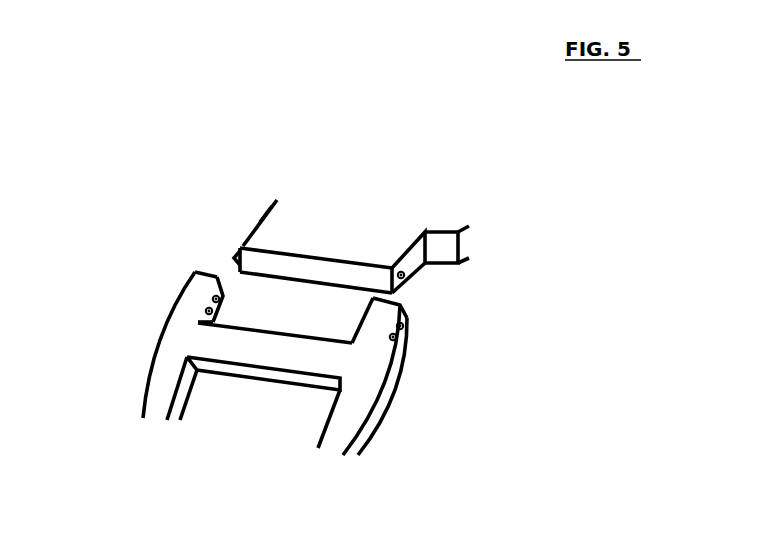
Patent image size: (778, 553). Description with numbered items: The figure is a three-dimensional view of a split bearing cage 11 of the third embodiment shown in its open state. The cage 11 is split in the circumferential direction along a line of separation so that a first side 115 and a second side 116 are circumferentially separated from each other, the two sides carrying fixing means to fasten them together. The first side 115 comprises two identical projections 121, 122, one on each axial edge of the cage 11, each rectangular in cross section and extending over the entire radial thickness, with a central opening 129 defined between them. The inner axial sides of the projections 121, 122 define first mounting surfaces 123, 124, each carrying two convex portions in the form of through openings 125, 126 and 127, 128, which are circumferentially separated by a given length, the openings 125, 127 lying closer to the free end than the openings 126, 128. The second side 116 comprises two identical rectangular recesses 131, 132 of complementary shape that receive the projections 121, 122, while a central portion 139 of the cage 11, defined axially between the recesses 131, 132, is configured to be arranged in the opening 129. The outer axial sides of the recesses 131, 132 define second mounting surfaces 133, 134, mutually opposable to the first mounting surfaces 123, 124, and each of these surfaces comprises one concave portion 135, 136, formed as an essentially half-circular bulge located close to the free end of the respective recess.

The cage 11 is at (470, 193).
The first side 115 is at (297, 316).
The second side 116 is at (323, 273).
The projection 121 is at (404, 307).
The projection 122 is at (190, 292).
The mounting surface 123 is at (355, 258).
The mounting surface 124 is at (222, 294).
The convex portion 125 is at (223, 296).
The convex portion 126 is at (200, 326).
The convex portion 127 is at (407, 330).
The convex portion 128 is at (404, 342).
The central opening 129 is at (330, 320).
The recess 131 is at (462, 250).
The recess 132 is at (256, 224).
The mounting surface 133 is at (409, 256).
The mounting surface 134 is at (226, 250).
The concave portion 135 is at (406, 275).
The concave portion 136 is at (235, 250).
The central portion 139 is at (303, 244).